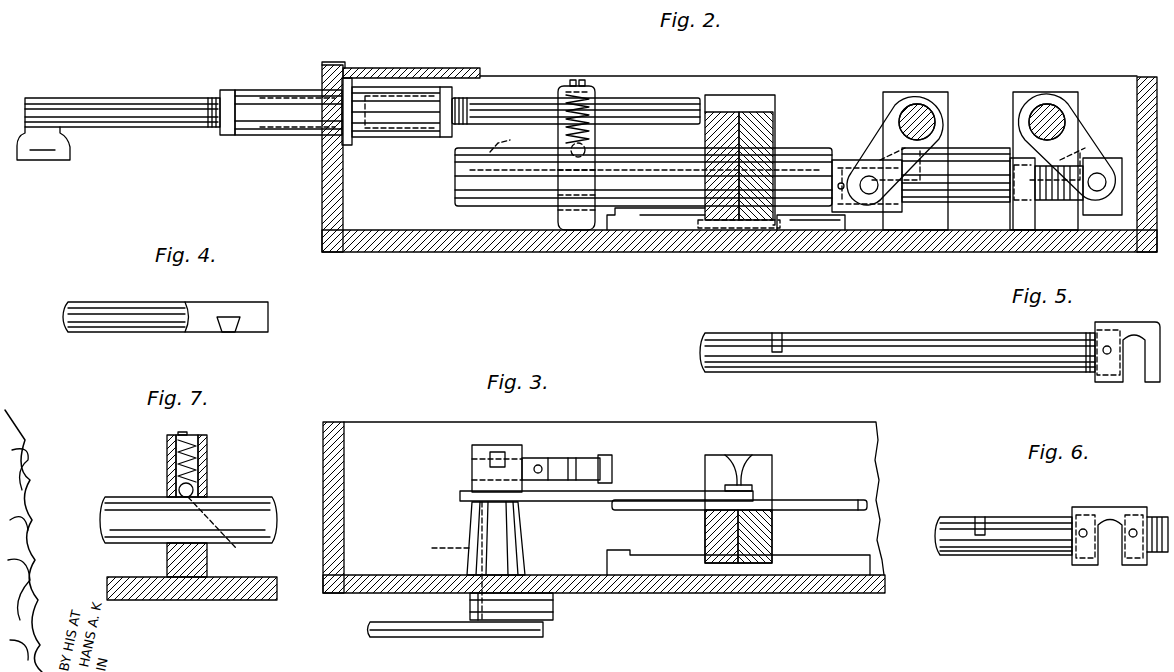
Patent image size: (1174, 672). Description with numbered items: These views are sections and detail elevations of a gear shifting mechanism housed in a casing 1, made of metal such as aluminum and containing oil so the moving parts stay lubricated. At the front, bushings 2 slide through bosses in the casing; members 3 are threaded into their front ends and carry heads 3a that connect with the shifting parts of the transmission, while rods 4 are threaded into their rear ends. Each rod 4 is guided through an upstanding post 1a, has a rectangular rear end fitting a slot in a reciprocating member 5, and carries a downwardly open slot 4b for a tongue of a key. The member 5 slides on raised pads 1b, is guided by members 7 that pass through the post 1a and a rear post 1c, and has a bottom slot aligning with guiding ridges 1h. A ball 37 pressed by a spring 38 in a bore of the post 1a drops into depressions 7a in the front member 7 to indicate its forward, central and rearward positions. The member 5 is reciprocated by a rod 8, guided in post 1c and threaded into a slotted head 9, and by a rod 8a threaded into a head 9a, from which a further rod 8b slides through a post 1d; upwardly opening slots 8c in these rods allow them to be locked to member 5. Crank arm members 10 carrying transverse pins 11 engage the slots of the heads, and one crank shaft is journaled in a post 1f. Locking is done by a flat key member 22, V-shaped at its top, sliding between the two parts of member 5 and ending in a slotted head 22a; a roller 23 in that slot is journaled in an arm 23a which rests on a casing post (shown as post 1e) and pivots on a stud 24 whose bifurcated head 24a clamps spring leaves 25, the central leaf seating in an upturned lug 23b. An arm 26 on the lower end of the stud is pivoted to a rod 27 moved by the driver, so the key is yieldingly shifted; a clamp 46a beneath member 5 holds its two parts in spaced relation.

In FIG. 2, the casing 1 is at (715, 240).
In FIG. 7, the casing 1 is at (150, 592).
In FIG. 3, the casing 1 is at (665, 585).
In FIG. 2, the upstanding lug or post 1a is at (596, 95).
In FIG. 2, the raised steps or pads 1b is at (692, 226).
In FIG. 3, the raised steps or pads 1b is at (795, 570).
In FIG. 2, the post 1c is at (950, 97).
In FIG. 2, the post 1d is at (1022, 212).
In FIG. 3, the pedestal 1e is at (482, 524).
In FIG. 2, the post 1f is at (1075, 97).
In FIG. 2, the guiding ridges 1h is at (648, 216).
In FIG. 3, the guiding ridges 1h is at (835, 556).
In FIG. 2, the bushings 2 is at (292, 126).
In FIG. 2, the members 3 is at (162, 106).
In FIG. 2, the heads 3a is at (70, 150).
In FIG. 2, the rods 4 is at (500, 110).
In FIG. 4, the rods 4 is at (112, 314).
In FIG. 4, the slots 4b is at (228, 332).
In FIG. 2, the reciprocating member 5 is at (776, 130).
In FIG. 3, the reciprocating member 5 is at (760, 470).
In FIG. 2, the guiding members 7 is at (456, 158).
In FIG. 7, the guiding members 7 is at (128, 500).
In FIG. 2, the depressions 7a is at (508, 140).
In FIG. 7, the depressions 7a is at (228, 533).
In FIG. 5, the rod 8 is at (925, 345).
In FIG. 2, the rod 8a is at (468, 206).
In FIG. 6, the rod 8a is at (1020, 526).
In FIG. 2, the rod 8b is at (985, 196).
In FIG. 6, the rod 8b is at (1156, 516).
In FIG. 5, the vertical slots 8c is at (778, 333).
In FIG. 6, the vertical slots 8c is at (978, 517).
In FIG. 2, the head 9 is at (1112, 158).
In FIG. 5, the head 9 is at (1130, 325).
In FIG. 2, the head 9a is at (893, 207).
In FIG. 6, the head 9a is at (1092, 510).
In FIG. 2, the crank arm members 10 is at (903, 132).
In FIG. 2, the transverse pins 11 is at (869, 193).
In FIG. 2, the key member 22 is at (742, 114).
In FIG. 3, the slotted head 22a is at (812, 502).
In FIG. 3, the roller 23 is at (775, 505).
In FIG. 3, the arm 23a is at (640, 492).
In FIG. 3, the lug 23b is at (612, 457).
In FIG. 3, the stud 24 is at (443, 561).
In FIG. 3, the bifurcated head 24a is at (472, 452).
In FIG. 3, the spring leaves 25 is at (532, 462).
In FIG. 3, the arm 26 is at (555, 605).
In FIG. 3, the rod 27 is at (385, 637).
In FIG. 7, the ball member 37 is at (194, 490).
In FIG. 7, the spring 38 is at (208, 465).
In FIG. 2, the plate 46a is at (766, 230).